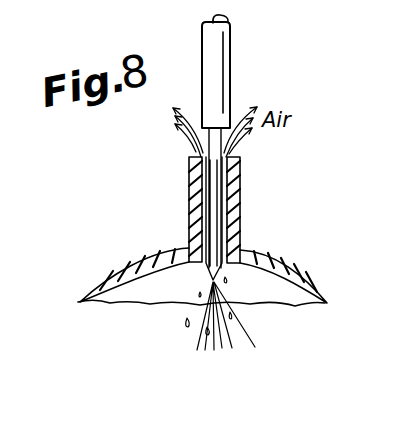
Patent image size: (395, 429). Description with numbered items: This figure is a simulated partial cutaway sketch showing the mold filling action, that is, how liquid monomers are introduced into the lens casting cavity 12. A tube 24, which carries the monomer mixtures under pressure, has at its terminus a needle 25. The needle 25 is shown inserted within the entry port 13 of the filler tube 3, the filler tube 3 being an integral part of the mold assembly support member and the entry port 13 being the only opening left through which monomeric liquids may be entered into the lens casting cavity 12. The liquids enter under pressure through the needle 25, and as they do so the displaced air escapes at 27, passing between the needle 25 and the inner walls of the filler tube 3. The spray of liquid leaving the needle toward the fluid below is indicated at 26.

The tube 24 is at (232, 88).
The air escape 27 is at (184, 140).
The needle 25 is at (215, 202).
The filler tube 3 is at (242, 215).
The entry port 13 is at (203, 228).
The lens casting cavity area 12 is at (158, 286).
The spray 26 is at (240, 343).